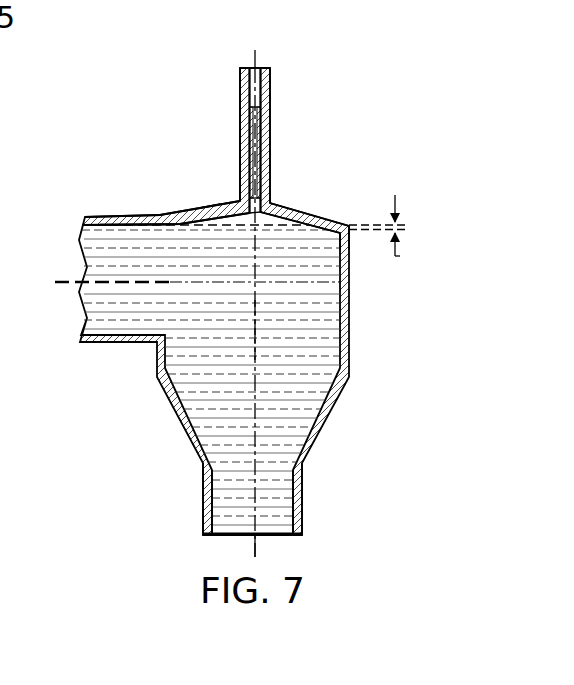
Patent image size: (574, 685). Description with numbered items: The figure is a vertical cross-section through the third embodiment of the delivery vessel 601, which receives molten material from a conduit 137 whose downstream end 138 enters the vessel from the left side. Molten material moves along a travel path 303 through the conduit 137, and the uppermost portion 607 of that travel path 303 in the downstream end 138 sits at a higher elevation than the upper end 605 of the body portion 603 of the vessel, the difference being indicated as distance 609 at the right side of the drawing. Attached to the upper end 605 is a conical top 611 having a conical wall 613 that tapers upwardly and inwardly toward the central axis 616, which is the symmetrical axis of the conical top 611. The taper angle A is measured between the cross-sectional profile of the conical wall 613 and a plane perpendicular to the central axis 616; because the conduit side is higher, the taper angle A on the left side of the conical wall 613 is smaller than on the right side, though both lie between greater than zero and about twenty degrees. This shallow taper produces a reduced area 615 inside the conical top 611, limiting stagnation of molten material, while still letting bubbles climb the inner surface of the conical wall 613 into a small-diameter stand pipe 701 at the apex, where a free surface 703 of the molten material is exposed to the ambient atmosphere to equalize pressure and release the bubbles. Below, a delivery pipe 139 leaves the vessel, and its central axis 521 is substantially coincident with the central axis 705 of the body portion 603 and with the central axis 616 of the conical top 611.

The conduit 137 is at (65, 209).
The downstream end 138 is at (90, 216).
The delivery pipe 139 is at (302, 500).
The travel path 303 is at (60, 281).
The central axis of the delivery pipe 521 is at (255, 545).
The delivery vessel 601 is at (355, 161).
The body portion 603 is at (350, 305).
The upper end 605 is at (349, 225).
The uppermost portion 607 is at (123, 225).
The distance 609 is at (397, 234).
The conical top 611 is at (307, 209).
The conical wall 613 is at (166, 214).
The area 615 is at (263, 213).
The central axis 616 is at (257, 52).
The stand pipe 701 is at (270, 115).
The free surface 703 is at (248, 104).
The central axis of the body portion 705 is at (255, 328).
The taper angle A is at (213, 252).